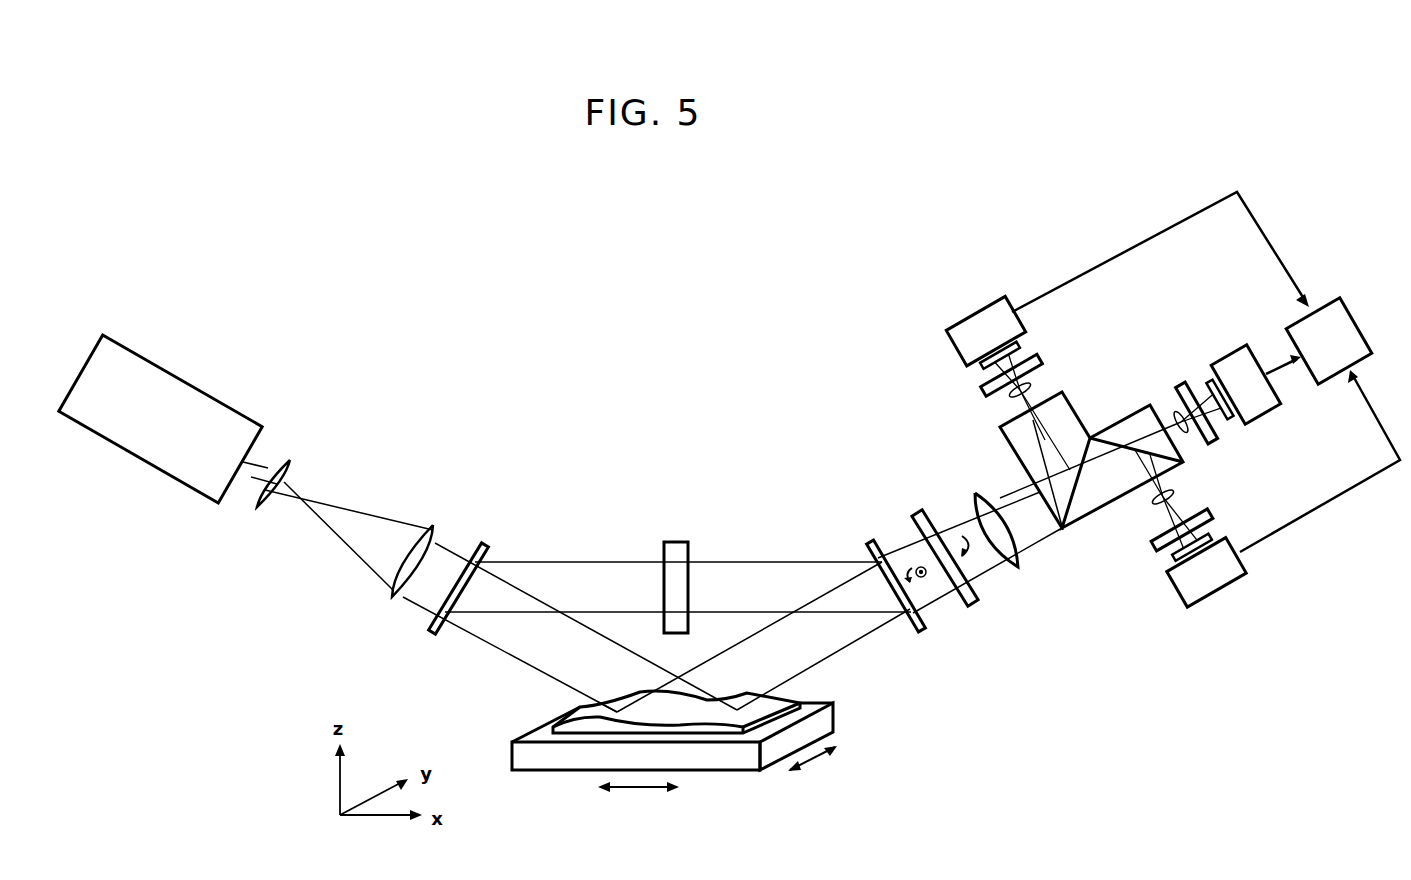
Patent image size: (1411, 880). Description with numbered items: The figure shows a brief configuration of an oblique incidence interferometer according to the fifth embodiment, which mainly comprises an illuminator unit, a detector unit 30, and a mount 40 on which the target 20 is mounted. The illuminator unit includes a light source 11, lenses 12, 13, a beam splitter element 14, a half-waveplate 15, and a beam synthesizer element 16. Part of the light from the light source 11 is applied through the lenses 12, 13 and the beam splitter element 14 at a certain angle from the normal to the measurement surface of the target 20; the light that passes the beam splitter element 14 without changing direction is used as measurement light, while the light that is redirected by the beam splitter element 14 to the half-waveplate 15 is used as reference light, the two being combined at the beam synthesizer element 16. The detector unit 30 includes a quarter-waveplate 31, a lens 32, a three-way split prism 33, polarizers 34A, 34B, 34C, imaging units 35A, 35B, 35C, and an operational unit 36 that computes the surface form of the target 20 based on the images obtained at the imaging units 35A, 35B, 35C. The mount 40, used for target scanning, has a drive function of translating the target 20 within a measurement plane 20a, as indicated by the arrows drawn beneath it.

The light source 11 is at (190, 377).
The lens 12 is at (286, 452).
The lens 13 is at (436, 528).
The beam splitter element 14 is at (486, 543).
The ½-waveplate 15 is at (676, 541).
The beam synthesizer element 16 is at (914, 633).
The target 20 is at (798, 697).
The measurement plane 20a is at (592, 704).
The detector unit 30 is at (1127, 662).
The ¼-waveplate 31 is at (968, 606).
The lens 32 is at (1020, 569).
The three-way split prism 33 is at (1087, 517).
The polarizer 34A is at (977, 393).
The polarizer 34B is at (1181, 380).
The polarizer 34C is at (1215, 510).
The imaging unit 35A is at (948, 341).
The imaging unit 35B is at (1232, 352).
The imaging unit 35C is at (1245, 558).
The operational unit 36 is at (1325, 300).
The mount 40 is at (718, 771).